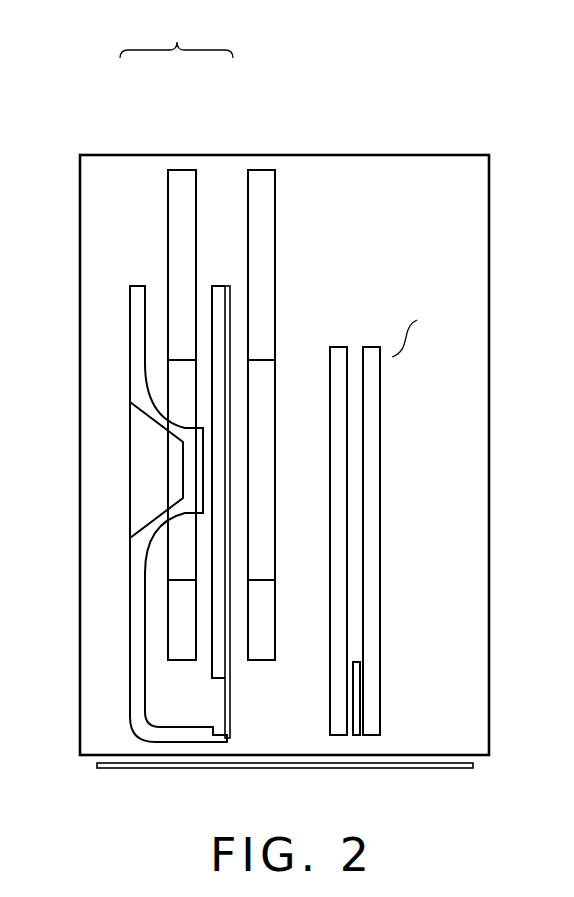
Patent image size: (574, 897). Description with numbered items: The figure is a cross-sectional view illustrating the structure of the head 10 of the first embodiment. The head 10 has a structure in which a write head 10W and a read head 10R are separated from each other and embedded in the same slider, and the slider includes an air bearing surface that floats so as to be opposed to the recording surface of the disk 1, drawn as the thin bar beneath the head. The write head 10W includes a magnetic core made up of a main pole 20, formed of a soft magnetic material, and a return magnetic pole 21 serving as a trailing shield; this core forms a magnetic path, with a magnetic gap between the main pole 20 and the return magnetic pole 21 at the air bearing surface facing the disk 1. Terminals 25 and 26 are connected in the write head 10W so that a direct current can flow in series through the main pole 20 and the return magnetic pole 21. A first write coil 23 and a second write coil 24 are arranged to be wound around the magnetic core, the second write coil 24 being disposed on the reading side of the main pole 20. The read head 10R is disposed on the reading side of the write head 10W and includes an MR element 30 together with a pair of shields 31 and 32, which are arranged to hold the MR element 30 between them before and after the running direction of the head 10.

The disk 1 is at (312, 772).
The head 10 is at (313, 153).
The write head 10W is at (176, 37).
The read head 10R is at (468, 330).
The main pole 20 is at (232, 703).
The return magnetic pole 21 is at (135, 676).
The first write coil 23 is at (178, 203).
The second write coil 24 is at (275, 197).
The terminal 25 is at (217, 297).
The terminal 26 is at (137, 297).
The MR element 30 is at (357, 692).
The shield 31 is at (340, 443).
The shield 32 is at (375, 497).